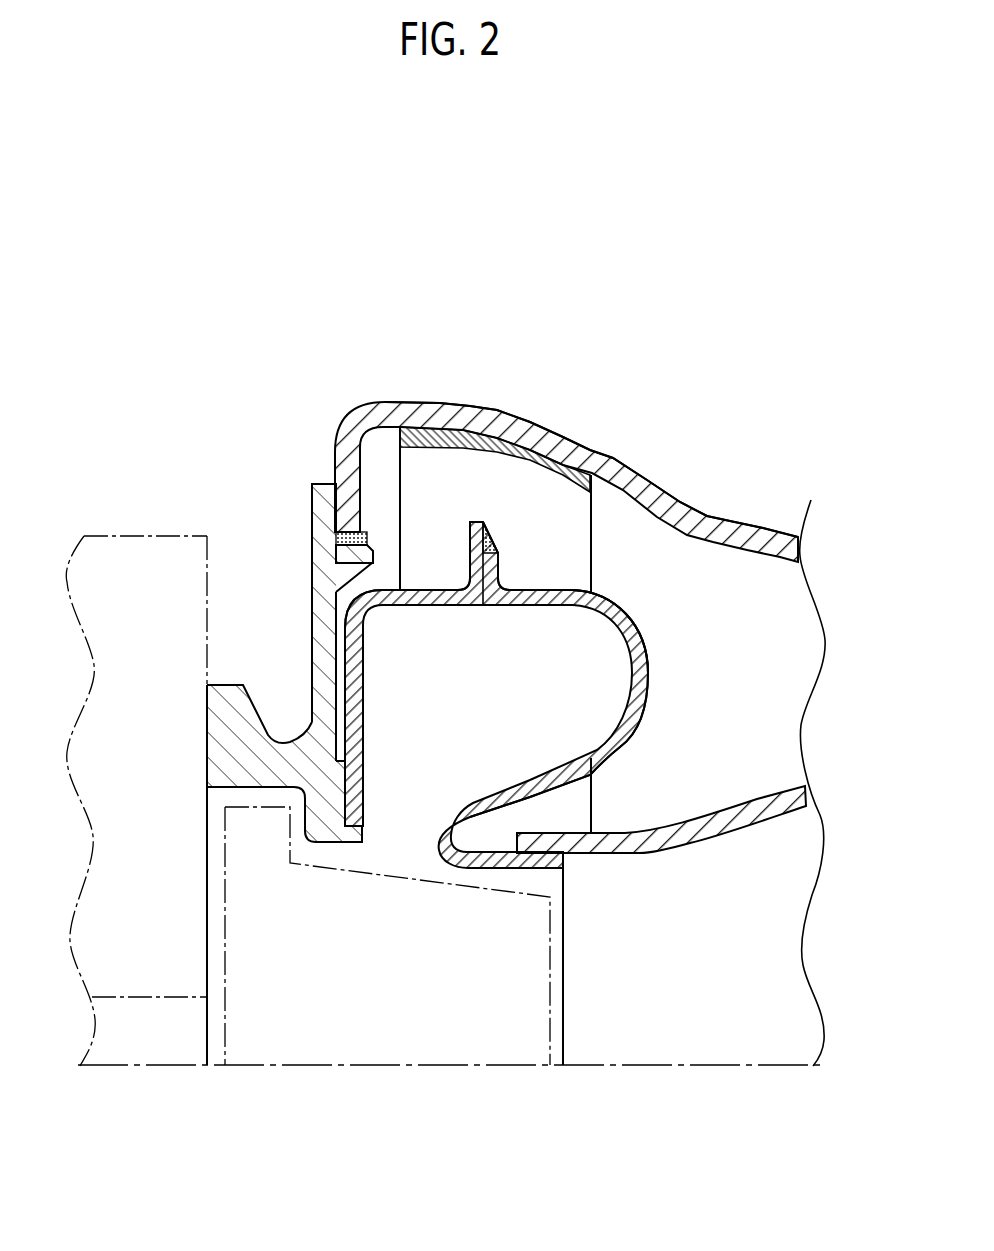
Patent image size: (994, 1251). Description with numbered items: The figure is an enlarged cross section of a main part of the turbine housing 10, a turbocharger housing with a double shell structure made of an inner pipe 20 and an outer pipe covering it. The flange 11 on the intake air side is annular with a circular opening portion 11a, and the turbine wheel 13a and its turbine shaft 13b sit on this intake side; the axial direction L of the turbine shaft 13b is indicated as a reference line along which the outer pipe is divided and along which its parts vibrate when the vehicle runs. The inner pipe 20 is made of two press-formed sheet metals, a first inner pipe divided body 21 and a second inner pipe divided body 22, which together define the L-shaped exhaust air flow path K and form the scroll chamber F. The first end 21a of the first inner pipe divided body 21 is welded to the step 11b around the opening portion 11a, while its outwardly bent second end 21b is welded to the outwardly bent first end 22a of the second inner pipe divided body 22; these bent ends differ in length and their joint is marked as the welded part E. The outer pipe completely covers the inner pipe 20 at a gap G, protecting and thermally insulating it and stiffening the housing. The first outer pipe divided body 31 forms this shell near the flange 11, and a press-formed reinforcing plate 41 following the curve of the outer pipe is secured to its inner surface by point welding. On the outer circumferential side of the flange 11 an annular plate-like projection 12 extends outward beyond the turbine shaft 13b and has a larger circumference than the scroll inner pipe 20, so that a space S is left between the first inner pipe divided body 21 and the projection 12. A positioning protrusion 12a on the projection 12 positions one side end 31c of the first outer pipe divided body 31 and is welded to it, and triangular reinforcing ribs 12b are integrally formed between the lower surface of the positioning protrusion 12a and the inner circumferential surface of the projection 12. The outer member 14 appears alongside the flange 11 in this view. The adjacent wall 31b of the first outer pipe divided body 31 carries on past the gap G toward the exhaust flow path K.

The turbine housing 10 is at (632, 308).
The flange on the intake air side 11 is at (207, 735).
The circular opening portion 11a is at (333, 845).
The step 11b is at (375, 845).
The annular plate-like projection 12 is at (312, 515).
The positioning protrusion 12a is at (350, 553).
The reinforcing ribs 12b is at (345, 570).
The turbine wheel 13a is at (552, 1022).
The turbine shaft 13b is at (110, 997).
The outer member 14 is at (113, 532).
The inner pipe 20 is at (428, 679).
The first inner pipe divided body 21 is at (447, 607).
The first end of the first inner pipe divided body 21a is at (362, 828).
The second end of the first inner pipe divided body 21b is at (472, 554).
The second inner pipe divided body 22 is at (522, 607).
The first end of the second inner pipe divided body 22a is at (495, 572).
The first outer pipe divided body 31 is at (632, 462).
The cover top wall 31b is at (549, 437).
The one side end of the first outer pipe divided body 31c is at (352, 515).
The plate (reinforcing plate) 41 is at (447, 437).
The welded part E is at (363, 540).
The scroll chamber F is at (565, 672).
The gap G is at (683, 567).
The exhaust air flow path K is at (655, 967).
The axial direction L is at (388, 1068).
The space S is at (338, 655).